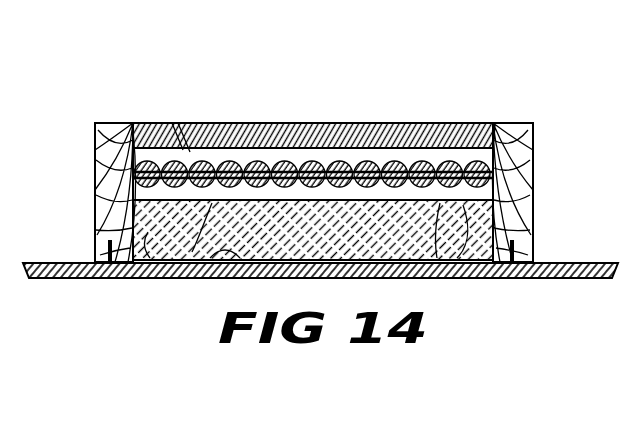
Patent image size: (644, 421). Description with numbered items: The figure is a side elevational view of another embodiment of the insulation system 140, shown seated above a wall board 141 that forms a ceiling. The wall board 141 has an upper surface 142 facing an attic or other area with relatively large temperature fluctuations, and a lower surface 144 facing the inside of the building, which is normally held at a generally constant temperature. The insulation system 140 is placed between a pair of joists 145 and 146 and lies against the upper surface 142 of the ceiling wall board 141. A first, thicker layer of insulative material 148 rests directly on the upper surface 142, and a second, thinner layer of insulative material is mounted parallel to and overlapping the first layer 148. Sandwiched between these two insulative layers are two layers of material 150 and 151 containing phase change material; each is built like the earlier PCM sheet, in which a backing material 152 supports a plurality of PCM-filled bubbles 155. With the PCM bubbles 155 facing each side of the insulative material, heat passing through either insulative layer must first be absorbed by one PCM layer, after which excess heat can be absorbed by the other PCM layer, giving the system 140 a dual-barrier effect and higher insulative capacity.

The insulation system 140 is at (466, 113).
The wall board 141 is at (307, 280).
The upper surface 142 is at (342, 125).
The lower surface 144 is at (542, 280).
The joist 145 is at (534, 151).
The joist 146 is at (95, 247).
The first layer of insulative material 148 is at (534, 228).
The layer of PCM material 150 is at (170, 281).
The layer of PCM material 151 is at (283, 123).
The backing material 152 is at (133, 178).
The PCM-filled bubbles 155 is at (178, 123).